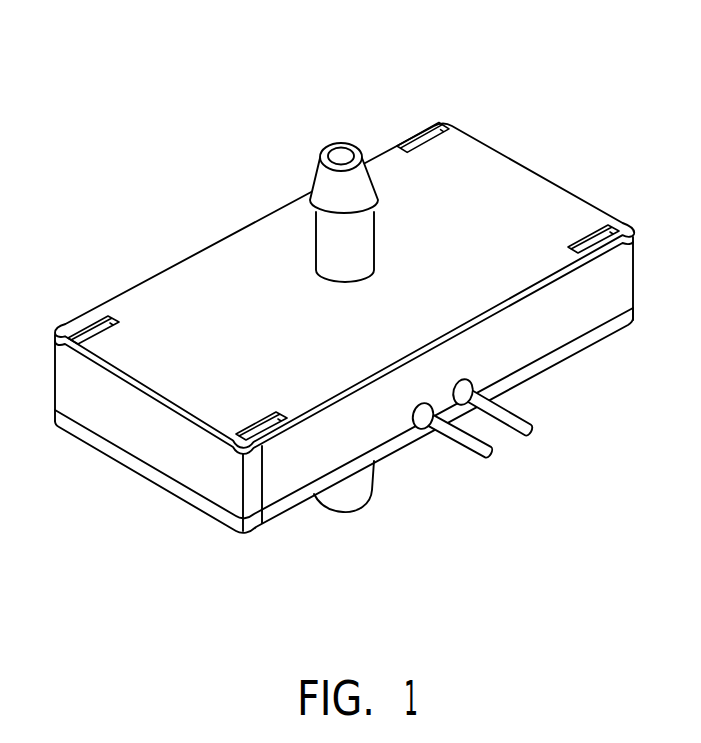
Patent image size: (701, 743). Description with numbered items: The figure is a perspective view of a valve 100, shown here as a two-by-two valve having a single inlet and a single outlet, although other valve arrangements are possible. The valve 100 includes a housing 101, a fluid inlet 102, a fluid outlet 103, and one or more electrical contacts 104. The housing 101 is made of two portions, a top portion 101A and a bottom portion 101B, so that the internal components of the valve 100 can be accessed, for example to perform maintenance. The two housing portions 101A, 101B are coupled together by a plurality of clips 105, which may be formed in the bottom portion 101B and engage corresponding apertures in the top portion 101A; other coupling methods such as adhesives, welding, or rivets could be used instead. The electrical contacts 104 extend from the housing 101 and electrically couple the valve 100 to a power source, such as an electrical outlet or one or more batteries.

The valve 100 is at (335, 293).
The housing 101 is at (335, 314).
The top portion 101A is at (105, 420).
The bottom portion 101B is at (190, 494).
The fluid inlet 102 is at (323, 178).
The fluid outlet 103 is at (348, 506).
The electrical contacts 104 is at (492, 458).
The clips 105 is at (428, 150).